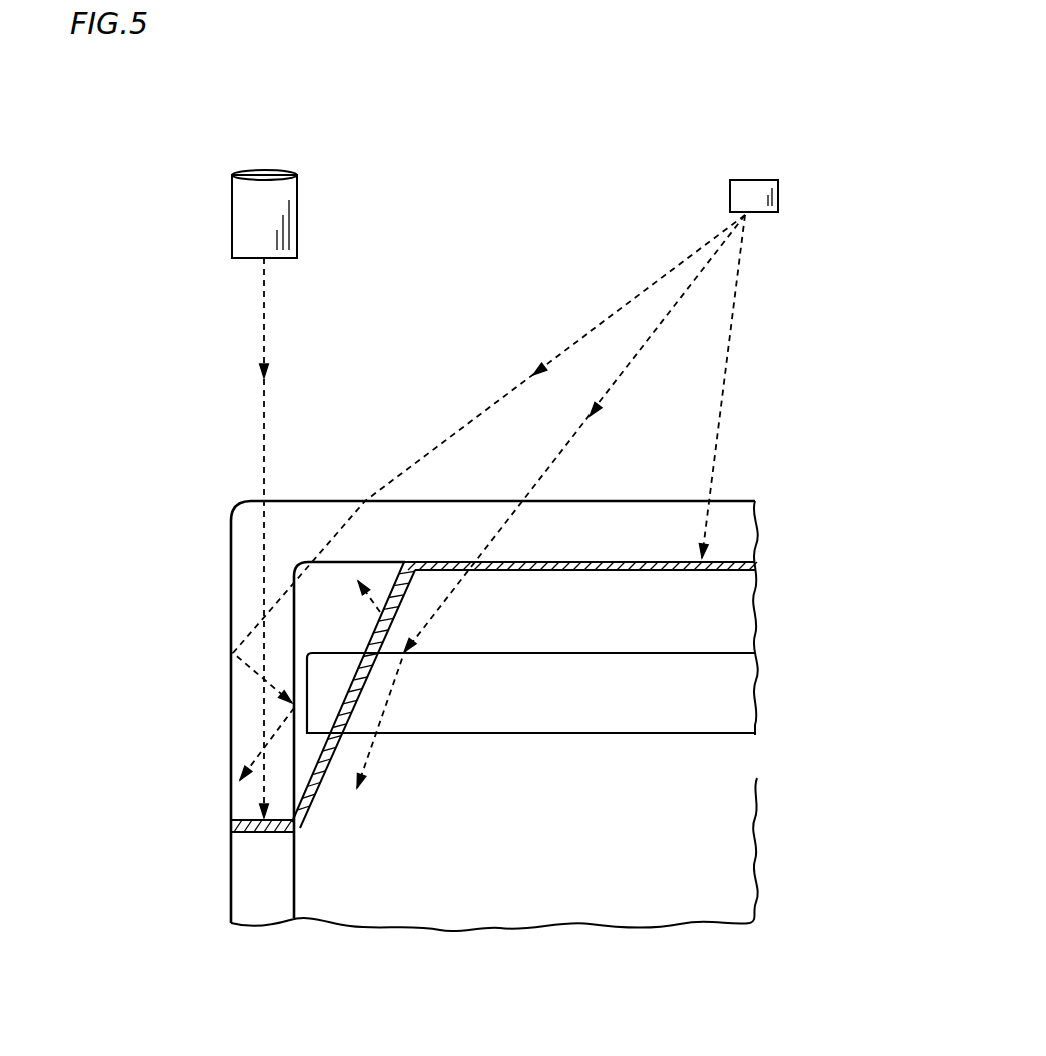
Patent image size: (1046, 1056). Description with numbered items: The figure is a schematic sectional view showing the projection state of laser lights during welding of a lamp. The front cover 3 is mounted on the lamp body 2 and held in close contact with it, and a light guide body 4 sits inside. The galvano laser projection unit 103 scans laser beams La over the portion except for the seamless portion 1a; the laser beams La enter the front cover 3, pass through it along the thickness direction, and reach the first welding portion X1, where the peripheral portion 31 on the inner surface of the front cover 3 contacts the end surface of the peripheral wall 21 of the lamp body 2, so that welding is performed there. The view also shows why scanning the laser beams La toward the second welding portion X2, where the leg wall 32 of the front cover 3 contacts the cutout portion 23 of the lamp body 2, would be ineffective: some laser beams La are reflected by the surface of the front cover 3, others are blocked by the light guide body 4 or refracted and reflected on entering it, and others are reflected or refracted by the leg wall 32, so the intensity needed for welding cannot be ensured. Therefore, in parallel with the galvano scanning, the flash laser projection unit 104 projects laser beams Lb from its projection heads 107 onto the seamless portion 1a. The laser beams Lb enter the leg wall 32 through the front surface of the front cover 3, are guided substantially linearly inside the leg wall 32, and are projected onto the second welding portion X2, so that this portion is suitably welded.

The flash laser projection unit 104 is at (254, 172).
The projection head 107 is at (258, 186).
The galvano laser projection unit 103 is at (752, 180).
The laser beams La is at (673, 268).
The laser beams Lb is at (262, 338).
The front cover 3 is at (745, 500).
The peripheral portion 31 is at (590, 558).
The peripheral wall 21 is at (734, 622).
The first welding portion X1 is at (738, 560).
The second welding portion X2 is at (232, 819).
The leg wall 32 is at (231, 630).
The cutout portion 23 is at (232, 838).
The lamp body 2 is at (242, 897).
The light guide body 4 is at (660, 718).
The seamless portion 1a is at (222, 588).